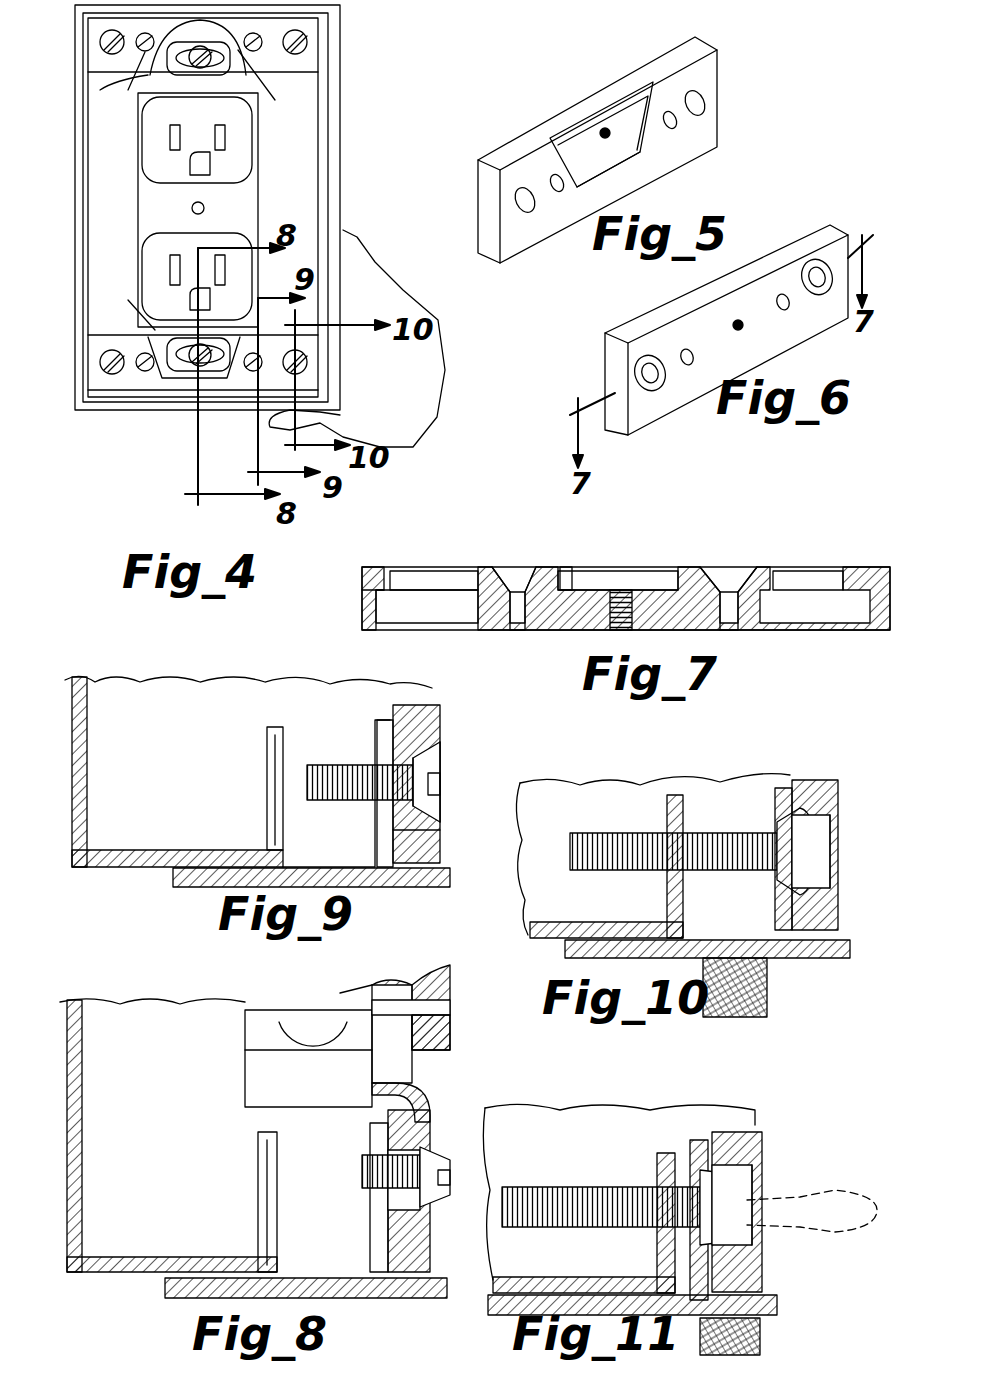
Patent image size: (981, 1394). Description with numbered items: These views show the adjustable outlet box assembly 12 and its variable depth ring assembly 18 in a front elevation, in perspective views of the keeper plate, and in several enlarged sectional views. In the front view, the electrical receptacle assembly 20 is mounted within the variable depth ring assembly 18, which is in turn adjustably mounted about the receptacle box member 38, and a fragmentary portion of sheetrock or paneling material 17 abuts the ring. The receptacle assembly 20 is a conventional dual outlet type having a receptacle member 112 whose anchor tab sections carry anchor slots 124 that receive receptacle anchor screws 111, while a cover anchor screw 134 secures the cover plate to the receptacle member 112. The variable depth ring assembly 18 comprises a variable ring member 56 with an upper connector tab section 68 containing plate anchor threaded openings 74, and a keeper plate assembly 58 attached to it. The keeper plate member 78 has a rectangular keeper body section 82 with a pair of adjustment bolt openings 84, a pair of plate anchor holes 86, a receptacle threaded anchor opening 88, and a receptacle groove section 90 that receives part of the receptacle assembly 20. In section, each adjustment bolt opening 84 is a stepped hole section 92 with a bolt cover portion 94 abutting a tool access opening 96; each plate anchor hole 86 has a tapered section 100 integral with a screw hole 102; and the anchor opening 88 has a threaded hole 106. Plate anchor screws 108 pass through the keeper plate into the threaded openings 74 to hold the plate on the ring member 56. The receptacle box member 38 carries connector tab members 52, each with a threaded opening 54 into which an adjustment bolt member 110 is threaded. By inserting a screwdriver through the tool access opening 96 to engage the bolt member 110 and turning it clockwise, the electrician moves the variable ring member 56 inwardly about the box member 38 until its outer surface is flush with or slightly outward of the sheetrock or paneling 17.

In FIG. 4, the adjustable outlet box assembly 12 is at (348, 42).
In FIG. 4, the sheetrock or paneling material 17 is at (350, 232).
In FIG. 10, the sheetrock or paneling material 17 is at (762, 990).
In FIG. 11, the sheetrock or paneling material 17 is at (760, 1338).
In FIG. 4, the variable depth ring assembly 18 is at (72, 380).
In FIG. 4, the electrical receptacle assembly 20 is at (262, 183).
In FIG. 4, the receptacle box member 38 is at (330, 100).
In FIG. 9, the receptacle box member 38 is at (95, 690).
In FIG. 10, the receptacle box member 38 is at (590, 905).
In FIG. 8, the receptacle box member 38 is at (75, 1140).
In FIG. 11, the receptacle box member 38 is at (619, 1198).
In FIG. 9, the connector tab members 52 is at (270, 735).
In FIG. 10, the connector tab members 52 is at (675, 800).
In FIG. 8, the connector tab members 52 is at (265, 1180).
In FIG. 11, the connector tab members 52 is at (668, 1160).
In FIG. 10, the threaded opening 54 is at (640, 830).
In FIG. 4, the variable ring member 56 is at (340, 118).
In FIG. 9, the variable ring member 56 is at (430, 888).
In FIG. 10, the variable ring member 56 is at (735, 915).
In FIG. 5, the keeper plate assembly 58 is at (530, 115).
In FIG. 6, the keeper plate assembly 58 is at (605, 368).
In FIG. 7, the keeper plate assembly 58 is at (670, 560).
In FIG. 9, the keeper plate assembly 58 is at (430, 725).
In FIG. 9, the upper connector tab section 68 is at (440, 835).
In FIG. 9, the plate anchor threaded openings 74 is at (365, 765).
In FIG. 5, the keeper plate member 78 is at (505, 150).
In FIG. 6, the keeper plate member 78 is at (830, 222).
In FIG. 7, the keeper plate member 78 is at (765, 570).
In FIG. 9, the keeper plate member 78 is at (440, 860).
In FIG. 10, the keeper plate member 78 is at (838, 785).
In FIG. 8, the keeper plate member 78 is at (400, 1242).
In FIG. 11, the keeper plate member 78 is at (765, 1272).
In FIG. 5, the keeper body section 82 is at (630, 178).
In FIG. 5, the adjustment bolt opening 84 is at (705, 105).
In FIG. 6, the adjustment bolt opening 84 is at (655, 392).
In FIG. 7, the adjustment bolt opening 84 is at (440, 568).
In FIG. 5, the plate anchor holes 86 is at (557, 190).
In FIG. 6, the plate anchor holes 86 is at (783, 310).
In FIG. 7, the plate anchor holes 86 is at (545, 567).
In FIG. 5, the receptacle threaded anchor opening 88 is at (605, 128).
In FIG. 6, the receptacle threaded anchor opening 88 is at (738, 320).
In FIG. 7, the receptacle threaded anchor opening 88 is at (640, 588).
In FIG. 8, the receptacle threaded anchor opening 88 is at (365, 1150).
In FIG. 5, the receptacle groove section 90 is at (645, 80).
In FIG. 6, the receptacle groove section 90 is at (690, 298).
In FIG. 7, the receptacle groove section 90 is at (625, 585).
In FIG. 7, the stepped hole section 92 is at (415, 565).
In FIG. 7, the bolt cover portion 94 is at (475, 620).
In FIG. 10, the bolt cover portion 94 is at (790, 790).
In FIG. 11, the bolt cover portion 94 is at (700, 1140).
In FIG. 7, the tool access opening 96 is at (495, 568).
In FIG. 10, the tool access opening 96 is at (840, 845).
In FIG. 11, the tool access opening 96 is at (762, 1190).
In FIG. 7, the tapered section 100 is at (560, 578).
In FIG. 9, the tapered section 100 is at (442, 748).
In FIG. 7, the screw hole 102 is at (518, 628).
In FIG. 9, the screw hole 102 is at (400, 810).
In FIG. 7, the threaded hole 106 is at (630, 625).
In FIG. 4, the plate anchor screws 108 is at (274, 82).
In FIG. 9, the plate anchor screws 108 is at (442, 778).
In FIG. 4, the adjustment bolt members 110 is at (100, 100).
In FIG. 10, the adjustment bolt members 110 is at (700, 830).
In FIG. 8, the adjustment bolt members 110 is at (411, 1043).
In FIG. 11, the adjustment bolt members 110 is at (550, 1190).
In FIG. 4, the receptacle anchor screws 111 is at (126, 191).
In FIG. 8, the receptacle anchor screws 111 is at (430, 1160).
In FIG. 8, the receptacle member 112 is at (265, 1025).
In FIG. 4, the anchor slots 124 is at (228, 60).
In FIG. 4, the cover anchor screw 134 is at (192, 208).